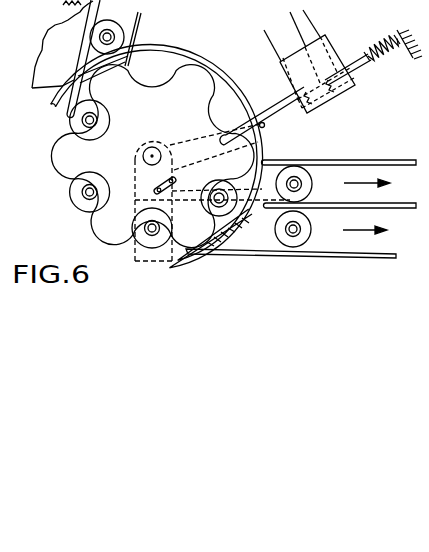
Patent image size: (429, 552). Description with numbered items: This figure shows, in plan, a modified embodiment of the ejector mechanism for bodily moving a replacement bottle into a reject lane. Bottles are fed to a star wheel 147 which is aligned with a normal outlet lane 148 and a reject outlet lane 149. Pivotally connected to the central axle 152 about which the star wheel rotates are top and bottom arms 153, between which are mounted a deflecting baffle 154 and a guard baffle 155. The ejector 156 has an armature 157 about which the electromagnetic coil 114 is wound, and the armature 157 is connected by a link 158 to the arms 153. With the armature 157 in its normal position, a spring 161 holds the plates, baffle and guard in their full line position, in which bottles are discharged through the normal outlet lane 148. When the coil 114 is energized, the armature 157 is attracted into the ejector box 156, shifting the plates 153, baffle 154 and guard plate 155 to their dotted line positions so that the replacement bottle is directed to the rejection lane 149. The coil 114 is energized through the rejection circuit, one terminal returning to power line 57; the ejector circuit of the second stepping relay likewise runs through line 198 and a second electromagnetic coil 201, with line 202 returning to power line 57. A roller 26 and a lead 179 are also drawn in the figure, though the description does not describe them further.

The roller 26 is at (122, 37).
The power line 57 is at (318, 14).
The electromagnetic coil 114 is at (345, 97).
The star wheel 147 is at (210, 44).
The normal outlet lane 148 is at (384, 236).
The reject outlet lane 149 is at (424, 150).
The central axle 152 is at (152, 147).
The top and bottom arms 153 is at (188, 248).
The deflecting baffle 154 is at (212, 198).
The guard baffle 155 is at (230, 238).
The ejector 156 is at (338, 54).
The armature 157 is at (352, 76).
The link 158 is at (255, 146).
The spring 161 is at (378, 52).
The lead wire 179 is at (292, 26).
The line 198 is at (273, 52).
The second electromagnetic coil 201 is at (323, 108).
The line 202 is at (284, 42).